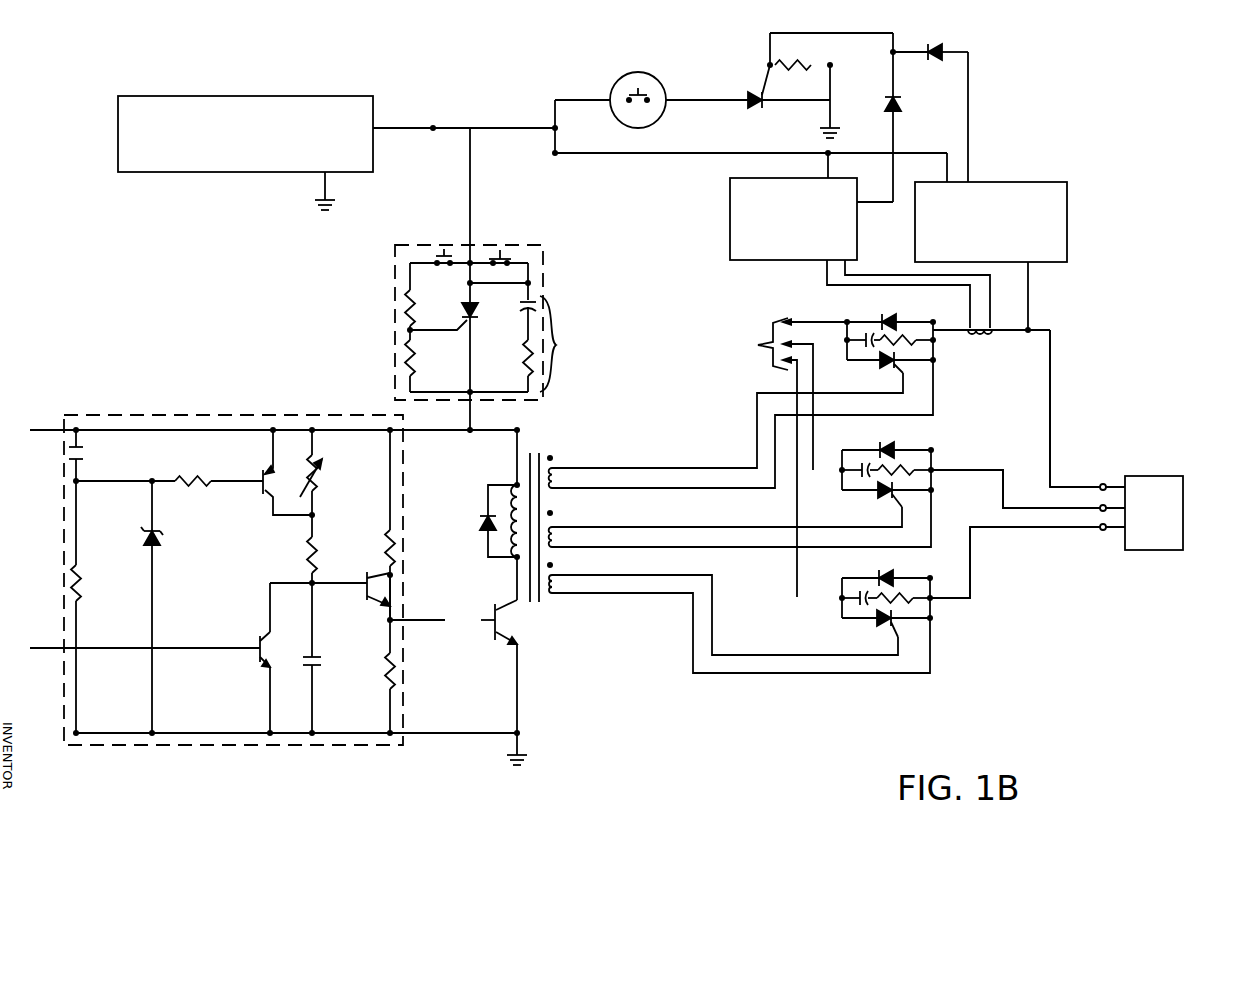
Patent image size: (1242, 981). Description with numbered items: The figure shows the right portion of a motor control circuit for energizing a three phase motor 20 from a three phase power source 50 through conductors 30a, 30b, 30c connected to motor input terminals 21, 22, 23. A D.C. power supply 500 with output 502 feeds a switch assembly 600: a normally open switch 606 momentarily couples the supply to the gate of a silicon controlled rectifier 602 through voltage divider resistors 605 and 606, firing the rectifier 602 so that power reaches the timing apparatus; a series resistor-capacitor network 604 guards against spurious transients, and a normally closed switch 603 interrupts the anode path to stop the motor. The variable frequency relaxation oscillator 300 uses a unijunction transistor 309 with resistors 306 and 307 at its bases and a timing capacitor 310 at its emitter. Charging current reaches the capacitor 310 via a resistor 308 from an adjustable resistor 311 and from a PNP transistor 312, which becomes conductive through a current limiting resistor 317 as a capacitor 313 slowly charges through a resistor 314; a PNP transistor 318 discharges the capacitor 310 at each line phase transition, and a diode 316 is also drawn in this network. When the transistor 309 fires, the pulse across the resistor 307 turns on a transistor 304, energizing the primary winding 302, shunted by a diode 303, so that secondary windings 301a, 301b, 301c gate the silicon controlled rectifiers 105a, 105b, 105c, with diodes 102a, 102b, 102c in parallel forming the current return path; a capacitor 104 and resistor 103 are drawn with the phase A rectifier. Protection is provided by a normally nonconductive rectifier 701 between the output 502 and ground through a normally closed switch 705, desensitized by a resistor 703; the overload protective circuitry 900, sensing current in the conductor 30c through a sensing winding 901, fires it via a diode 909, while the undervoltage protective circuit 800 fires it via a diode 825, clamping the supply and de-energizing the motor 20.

The D.C. power supply 500 is at (245, 153).
The output of the D.C. power supply 502 is at (435, 126).
The normally closed switch 705 is at (655, 80).
The silicon controlled rectifier 701 is at (758, 101).
The resistor 703 is at (816, 64).
The diode 909 is at (901, 104).
The diode 825 is at (936, 46).
The overload protective circuitry 900 is at (793, 219).
The undervoltage protective circuit 800 is at (991, 222).
The sensing winding 901 is at (976, 334).
The conductor 30c is at (1050, 362).
The conductor 30b is at (1003, 495).
The conductor 30a is at (1056, 528).
The three phase power source 50 is at (728, 355).
The diode 102c is at (892, 316).
The silicon controlled rectifier 105c is at (888, 368).
The diode 102b is at (889, 444).
The silicon controlled rectifier 105b is at (886, 497).
The diode 102a is at (888, 572).
The silicon controlled rectifier 105a is at (883, 625).
The capacitor 104 is at (858, 604).
The resistor 103 is at (918, 604).
The three phase motor 20 is at (1180, 477).
The input terminal 21 is at (1106, 483).
The input terminal 22 is at (1100, 507).
The input terminal 23 is at (1109, 539).
The switch assembly 600 is at (543, 283).
The normally open switch 606 is at (450, 253).
The normally closed switch 603 is at (502, 255).
The voltage divider resistor 605 is at (404, 302).
The silicon controlled rectifier 602 is at (475, 319).
The series resistor-capacitor network 604 is at (559, 344).
The variable frequency relaxation oscillator 300 is at (272, 745).
The capacitor 313 is at (85, 451).
The current limiting resistor 317 is at (203, 470).
The PNP transistor 312 is at (268, 490).
The adjustable resistor 311 is at (318, 476).
The zener diode 316 is at (161, 538).
The resistor 314 is at (82, 575).
The resistor 308 is at (307, 556).
The resistor 306 is at (385, 547).
The unijunction transistor 309 is at (404, 602).
The PNP transistor 318 is at (258, 645).
The timing capacitor 310 is at (314, 657).
The resistor 307 is at (396, 668).
The primary winding 302 is at (517, 488).
The diode 303 is at (481, 522).
The transistor 304 is at (526, 625).
The transformer secondary winding 301c is at (557, 490).
The transformer secondary winding 301b is at (559, 546).
The transformer secondary winding 301a is at (559, 594).